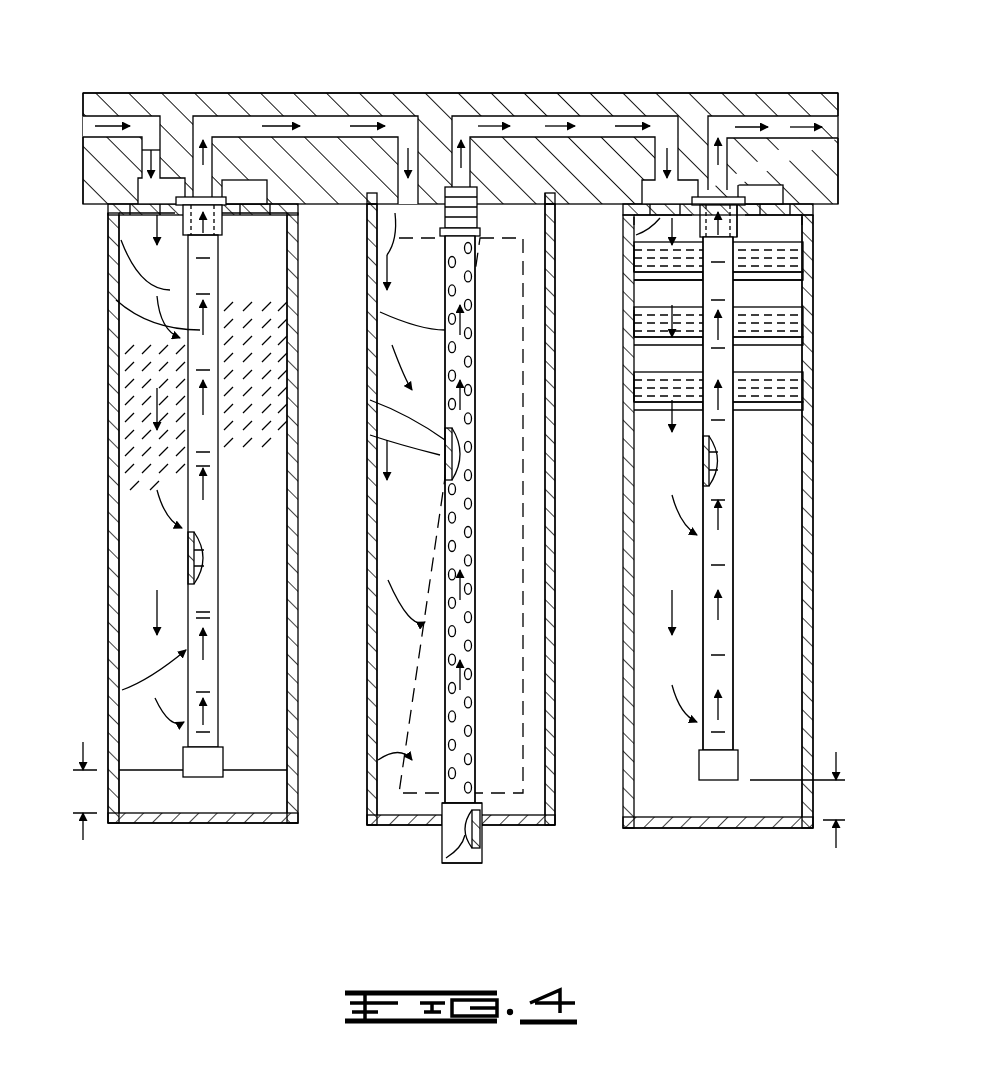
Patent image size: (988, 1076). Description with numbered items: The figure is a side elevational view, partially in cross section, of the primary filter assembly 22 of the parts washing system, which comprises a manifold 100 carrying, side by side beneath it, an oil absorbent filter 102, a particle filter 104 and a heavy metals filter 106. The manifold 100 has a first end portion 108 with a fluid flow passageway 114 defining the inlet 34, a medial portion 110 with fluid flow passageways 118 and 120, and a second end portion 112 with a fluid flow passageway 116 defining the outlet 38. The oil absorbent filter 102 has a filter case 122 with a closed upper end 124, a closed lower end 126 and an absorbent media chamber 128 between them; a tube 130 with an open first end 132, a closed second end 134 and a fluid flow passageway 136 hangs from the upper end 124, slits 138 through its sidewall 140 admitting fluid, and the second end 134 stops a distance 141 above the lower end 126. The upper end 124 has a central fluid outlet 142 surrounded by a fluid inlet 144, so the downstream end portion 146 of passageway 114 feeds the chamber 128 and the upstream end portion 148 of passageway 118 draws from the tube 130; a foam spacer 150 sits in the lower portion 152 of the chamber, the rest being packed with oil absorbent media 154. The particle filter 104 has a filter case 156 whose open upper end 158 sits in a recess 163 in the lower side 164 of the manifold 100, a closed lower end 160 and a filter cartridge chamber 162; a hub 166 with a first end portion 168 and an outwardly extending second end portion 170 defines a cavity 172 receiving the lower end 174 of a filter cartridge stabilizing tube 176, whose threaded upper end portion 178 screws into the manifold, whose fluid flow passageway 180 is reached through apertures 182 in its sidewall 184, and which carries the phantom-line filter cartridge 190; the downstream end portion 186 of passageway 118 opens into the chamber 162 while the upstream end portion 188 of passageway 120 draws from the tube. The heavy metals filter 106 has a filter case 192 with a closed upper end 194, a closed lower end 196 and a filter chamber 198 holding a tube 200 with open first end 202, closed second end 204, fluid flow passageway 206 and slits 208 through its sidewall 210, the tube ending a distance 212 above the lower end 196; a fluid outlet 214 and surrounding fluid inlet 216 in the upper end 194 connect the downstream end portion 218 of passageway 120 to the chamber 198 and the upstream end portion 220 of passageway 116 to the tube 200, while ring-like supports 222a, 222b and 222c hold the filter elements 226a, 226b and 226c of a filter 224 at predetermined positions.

The primary filter assembly 22 is at (767, 43).
The inlet 34 is at (88, 137).
The outlet 38 is at (838, 130).
The manifold 100 is at (614, 92).
The oil absorbent filter 102 is at (108, 500).
The particle filter 104 is at (367, 618).
The heavy metals filter 106 is at (623, 618).
The first end portion 108 is at (95, 93).
The medial portion 110 is at (495, 112).
The second end portion 112 is at (823, 108).
The fluid flow passageway 114 is at (137, 118).
The fluid flow passageway 116 is at (778, 130).
The fluid flow passageway 118 is at (318, 116).
The fluid flow passageway 120 is at (600, 118).
The filter case 122 is at (108, 578).
The closed upper end 124 is at (128, 214).
The closed lower end 126 is at (150, 823).
The absorbent media chamber 128 is at (120, 625).
The tube 130 is at (188, 650).
The open first end 132 is at (205, 197).
The closed second end 134 is at (200, 768).
The fluid flow passageway 136 is at (193, 553).
The slits 138 is at (217, 485).
The sidewall 140 is at (192, 572).
The distance 141 is at (84, 858).
The fluid outlet 142 is at (207, 212).
The fluid inlet 144 is at (140, 216).
The downstream end portion 146 is at (140, 162).
The upstream end portion 148 is at (195, 175).
The foam spacer 150 is at (232, 795).
The lower portion 152 is at (285, 795).
The oil absorbent media 154 is at (148, 380).
The filter case 156 is at (368, 545).
The open upper end 158 is at (547, 200).
The closed lower end 160 is at (525, 826).
The filter cartridge chamber 162 is at (388, 316).
The recess 163 is at (366, 193).
The lower side 164 is at (566, 210).
The hub 166 is at (447, 832).
The first end portion 168 is at (442, 815).
The second end portion 170 is at (476, 860).
The cavity 172 is at (468, 850).
The lower end 174 is at (462, 834).
The filter cartridge stabilizing tube 176 is at (478, 612).
The threaded upper end portion 178 is at (468, 198).
The fluid flow passageway 180 is at (450, 436).
The apertures 182 is at (472, 333).
The sidewall 184 is at (448, 452).
The downstream end portion 186 is at (402, 140).
The upstream end portion 188 is at (467, 162).
The filter cartridge 190 is at (397, 527).
The filter case 192 is at (813, 716).
The closed upper end 194 is at (818, 198).
The closed lower end 196 is at (745, 828).
The filter chamber 198 is at (782, 507).
The tube 200 is at (736, 626).
The open first end 202 is at (790, 222).
The closed second end 204 is at (717, 780).
The fluid flow passageway 206 is at (705, 452).
The slits 208 is at (745, 547).
The sidewall 210 is at (707, 470).
The distance 212 is at (837, 858).
The fluid outlet 214 is at (722, 196).
The fluid inlet 216 is at (765, 217).
The downstream end portion 218 is at (655, 190).
The upstream end portion 220 is at (712, 182).
The support 222a is at (643, 277).
The support 222b is at (643, 340).
The support 222c is at (643, 405).
The filter 224 is at (798, 323).
The filter element 226a is at (800, 258).
The filter element 226b is at (798, 330).
The filter element 226c is at (795, 392).